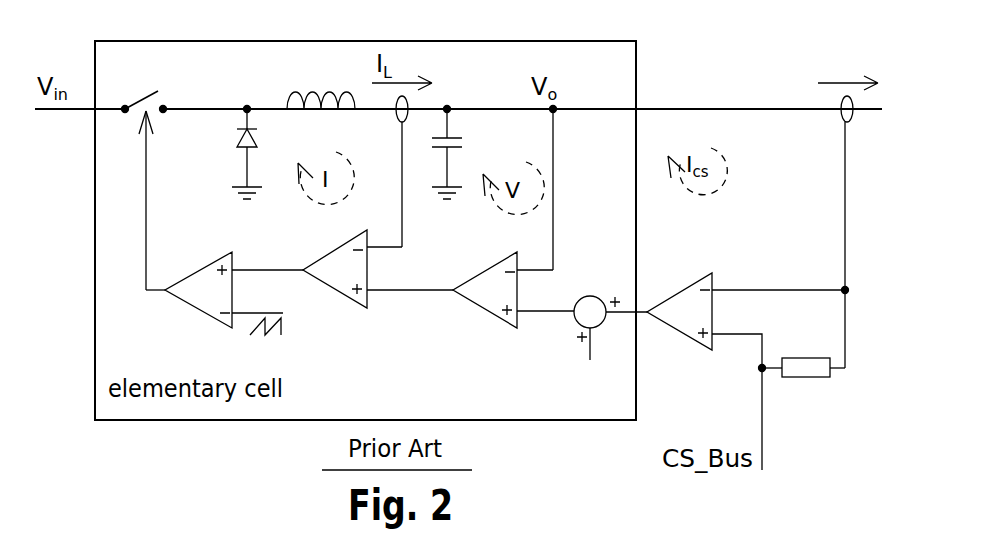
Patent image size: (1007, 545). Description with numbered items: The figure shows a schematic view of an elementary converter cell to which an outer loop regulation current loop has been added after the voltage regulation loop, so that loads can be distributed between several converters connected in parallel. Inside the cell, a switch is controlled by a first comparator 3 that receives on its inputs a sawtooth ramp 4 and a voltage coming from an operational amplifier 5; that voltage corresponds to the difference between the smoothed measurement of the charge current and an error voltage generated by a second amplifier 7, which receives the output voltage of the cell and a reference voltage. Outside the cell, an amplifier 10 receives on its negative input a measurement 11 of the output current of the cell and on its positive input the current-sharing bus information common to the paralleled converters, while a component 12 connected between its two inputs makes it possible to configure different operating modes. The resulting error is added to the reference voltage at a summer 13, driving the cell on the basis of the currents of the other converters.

The first comparator 3 is at (200, 287).
The sawtooth ramp 4 is at (282, 337).
The operational amplifier 5 is at (340, 292).
The second amplifier 7 is at (490, 308).
The amplifier 10 is at (680, 302).
The measurement of the output current 11 is at (853, 115).
The component 12 is at (810, 377).
The summer 13 is at (598, 298).